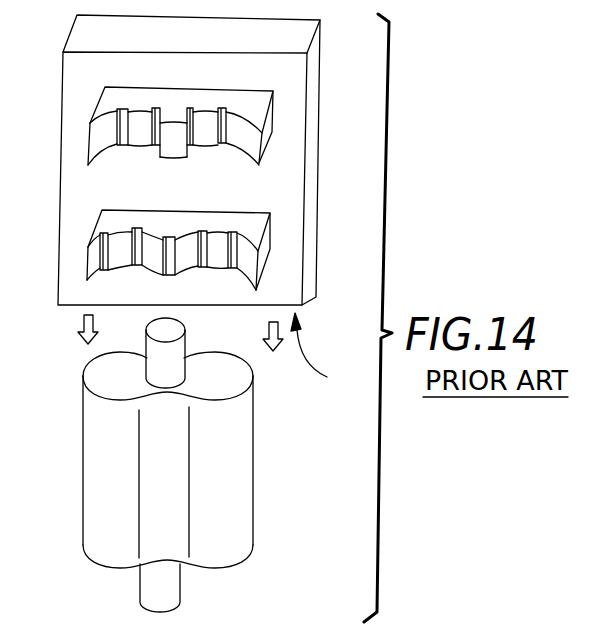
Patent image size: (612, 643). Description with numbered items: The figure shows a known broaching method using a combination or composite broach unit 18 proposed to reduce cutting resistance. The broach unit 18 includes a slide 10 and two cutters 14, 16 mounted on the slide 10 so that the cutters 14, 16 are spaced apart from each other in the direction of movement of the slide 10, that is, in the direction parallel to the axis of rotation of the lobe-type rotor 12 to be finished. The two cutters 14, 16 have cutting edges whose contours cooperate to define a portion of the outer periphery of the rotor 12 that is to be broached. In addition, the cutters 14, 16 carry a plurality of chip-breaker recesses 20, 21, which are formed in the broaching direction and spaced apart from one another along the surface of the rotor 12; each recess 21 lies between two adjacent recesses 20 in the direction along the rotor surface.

The slide 10 is at (295, 199).
The lobe-type rotor 12 is at (233, 543).
The cutter 14 is at (221, 231).
The cutter 16 is at (221, 112).
The composite broach unit 18 is at (323, 353).
The chip-breaker recesses 20 is at (104, 236).
The chip-breaker recess 21 is at (155, 110).